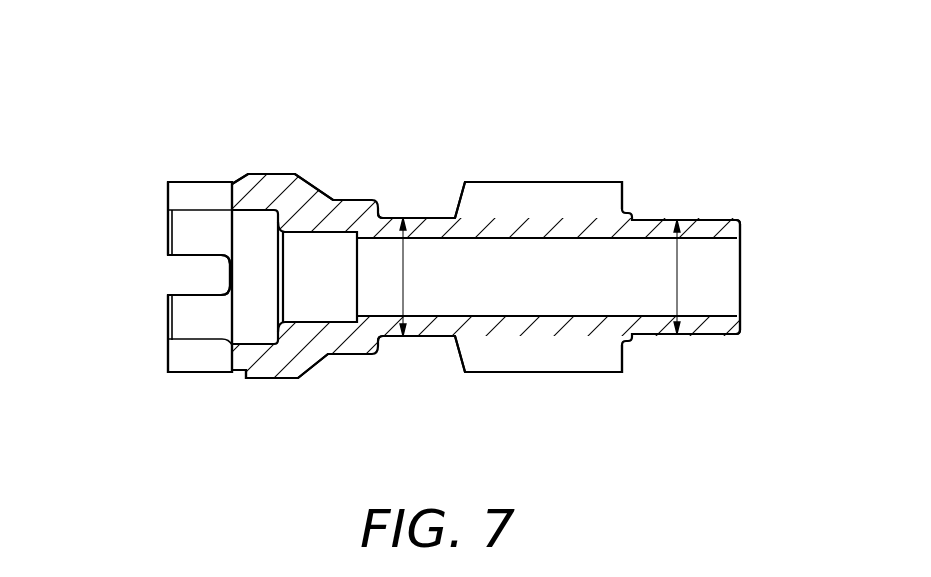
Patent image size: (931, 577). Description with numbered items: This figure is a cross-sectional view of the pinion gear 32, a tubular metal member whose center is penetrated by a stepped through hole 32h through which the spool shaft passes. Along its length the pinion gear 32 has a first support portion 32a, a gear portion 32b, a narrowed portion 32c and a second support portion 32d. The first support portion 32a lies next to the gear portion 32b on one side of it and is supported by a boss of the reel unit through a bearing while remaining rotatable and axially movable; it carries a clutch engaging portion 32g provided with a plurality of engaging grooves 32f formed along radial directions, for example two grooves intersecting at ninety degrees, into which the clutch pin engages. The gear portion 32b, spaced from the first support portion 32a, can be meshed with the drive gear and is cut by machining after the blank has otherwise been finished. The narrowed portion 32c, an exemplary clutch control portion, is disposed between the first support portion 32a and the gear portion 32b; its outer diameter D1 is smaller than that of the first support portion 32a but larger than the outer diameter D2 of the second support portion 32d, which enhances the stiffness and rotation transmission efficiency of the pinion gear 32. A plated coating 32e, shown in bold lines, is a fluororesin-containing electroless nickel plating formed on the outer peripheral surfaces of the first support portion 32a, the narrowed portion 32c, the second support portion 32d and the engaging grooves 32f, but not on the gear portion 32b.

The pinion gear 32 is at (448, 149).
The first support portion 32a is at (267, 168).
The gear portion 32b is at (569, 214).
The narrowed portion 32c is at (403, 202).
The second support portion 32d is at (693, 220).
The plated coating 32e is at (467, 414).
The engaging grooves 32f is at (148, 246).
The clutch engaging portion 32g is at (200, 182).
The through hole 32h is at (547, 381).
The outer diameter of narrowed portion D1 is at (421, 277).
The outer diameter of second support portion D2 is at (698, 277).